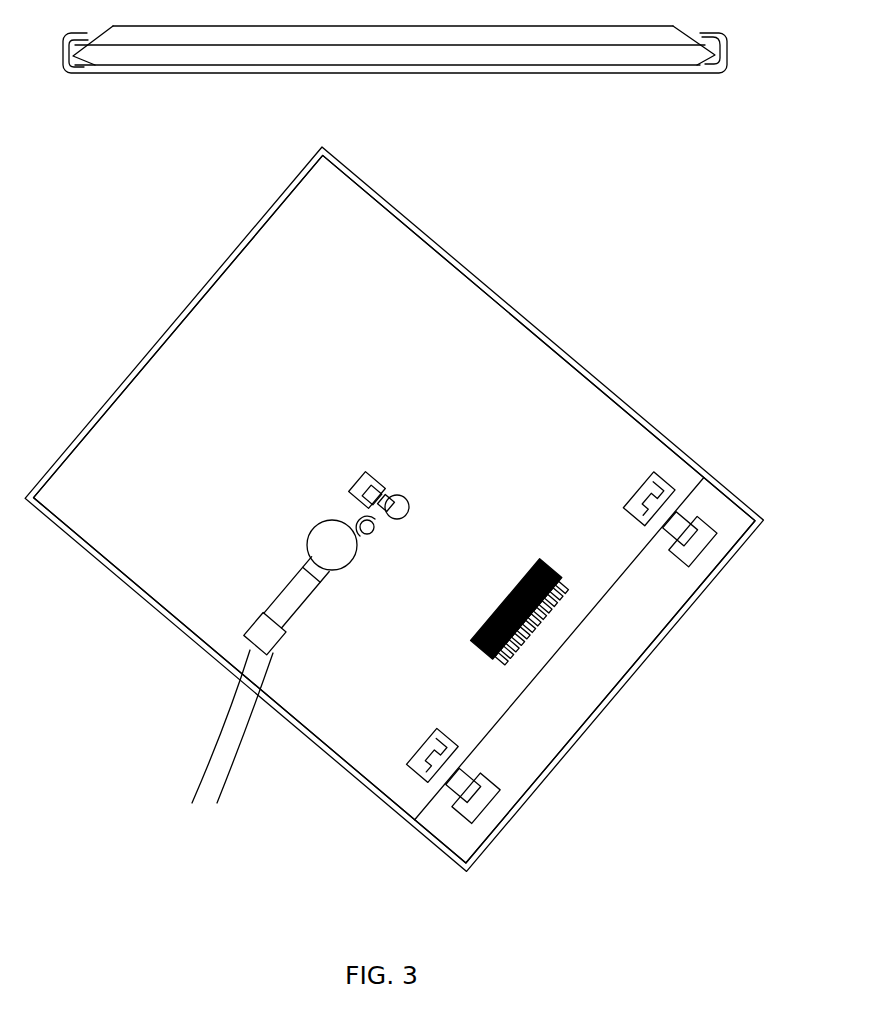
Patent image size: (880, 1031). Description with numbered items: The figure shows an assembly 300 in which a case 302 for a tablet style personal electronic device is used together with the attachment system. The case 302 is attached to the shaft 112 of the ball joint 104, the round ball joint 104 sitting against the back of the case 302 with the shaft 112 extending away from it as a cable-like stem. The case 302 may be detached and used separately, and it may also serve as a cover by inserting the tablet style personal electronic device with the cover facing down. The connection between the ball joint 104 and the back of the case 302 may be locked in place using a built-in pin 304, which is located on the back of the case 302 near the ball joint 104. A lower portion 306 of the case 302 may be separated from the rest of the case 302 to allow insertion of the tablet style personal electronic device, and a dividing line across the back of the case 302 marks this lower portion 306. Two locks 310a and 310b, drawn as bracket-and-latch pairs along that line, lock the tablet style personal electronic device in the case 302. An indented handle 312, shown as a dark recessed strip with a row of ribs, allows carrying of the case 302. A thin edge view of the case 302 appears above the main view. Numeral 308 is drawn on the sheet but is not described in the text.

The assembly 300 is at (74, 197).
The case 302 is at (382, 190).
The built-in pin 304 is at (401, 488).
The lower portion 306 is at (644, 405).
The circuit board 308 is at (639, 678).
The lock 310a is at (491, 815).
The lock 310b is at (705, 562).
The indented handle 312 is at (533, 650).
The ball joint 104 is at (309, 553).
The shaft 112 is at (236, 732).